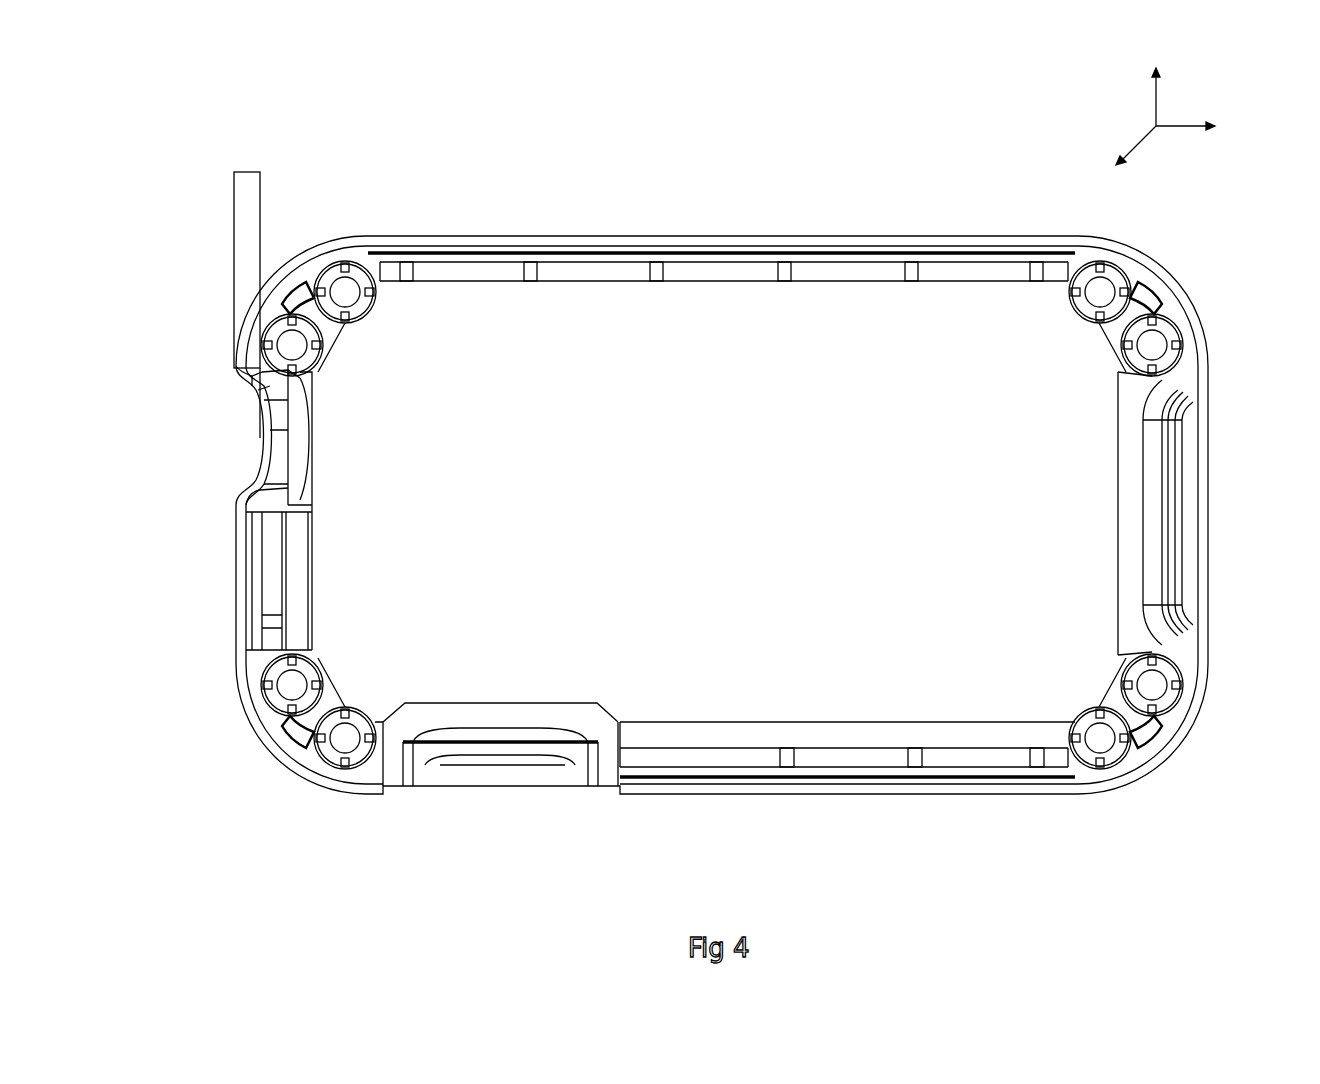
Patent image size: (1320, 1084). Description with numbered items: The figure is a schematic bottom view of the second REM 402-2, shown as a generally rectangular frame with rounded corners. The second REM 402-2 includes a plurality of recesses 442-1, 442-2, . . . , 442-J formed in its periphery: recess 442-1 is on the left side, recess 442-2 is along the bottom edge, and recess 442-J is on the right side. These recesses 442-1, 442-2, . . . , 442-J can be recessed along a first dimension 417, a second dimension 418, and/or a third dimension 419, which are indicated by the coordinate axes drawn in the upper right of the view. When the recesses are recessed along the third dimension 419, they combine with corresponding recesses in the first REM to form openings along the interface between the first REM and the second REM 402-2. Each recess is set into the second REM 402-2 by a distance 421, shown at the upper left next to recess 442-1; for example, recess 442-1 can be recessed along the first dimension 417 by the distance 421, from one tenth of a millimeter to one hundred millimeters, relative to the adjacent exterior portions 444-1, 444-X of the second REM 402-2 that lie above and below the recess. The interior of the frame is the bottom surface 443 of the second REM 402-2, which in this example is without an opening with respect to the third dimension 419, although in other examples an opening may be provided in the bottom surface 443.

The second REM 402-2 is at (188, 186).
The distance 421 is at (250, 172).
The exterior portion 444-1 is at (242, 368).
The recess 442-1 is at (245, 440).
The exterior portion 444-X is at (262, 458).
The recess 442-J is at (1203, 510).
The recess 442-2 is at (505, 780).
The bottom surface 443 is at (741, 527).
The first dimension 417 is at (1207, 127).
The second dimension 418 is at (1157, 85).
The third dimension 419 is at (1120, 159).